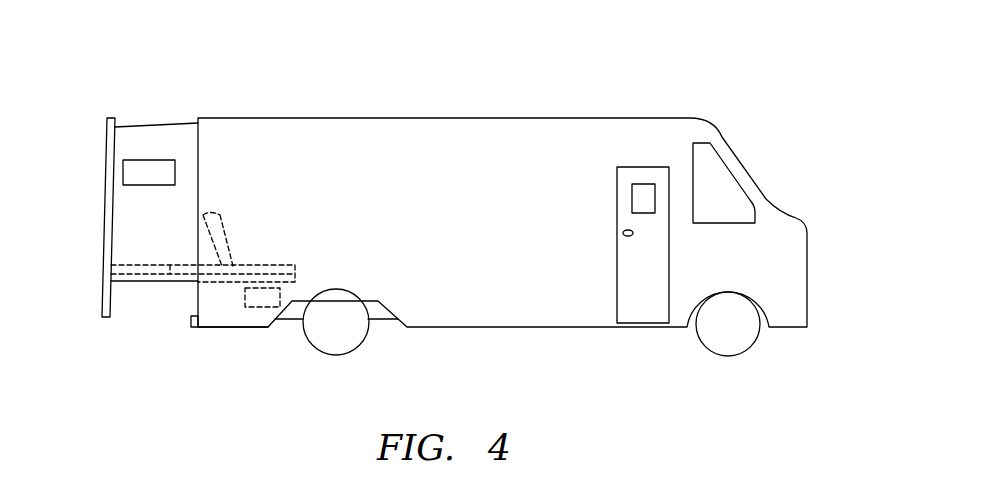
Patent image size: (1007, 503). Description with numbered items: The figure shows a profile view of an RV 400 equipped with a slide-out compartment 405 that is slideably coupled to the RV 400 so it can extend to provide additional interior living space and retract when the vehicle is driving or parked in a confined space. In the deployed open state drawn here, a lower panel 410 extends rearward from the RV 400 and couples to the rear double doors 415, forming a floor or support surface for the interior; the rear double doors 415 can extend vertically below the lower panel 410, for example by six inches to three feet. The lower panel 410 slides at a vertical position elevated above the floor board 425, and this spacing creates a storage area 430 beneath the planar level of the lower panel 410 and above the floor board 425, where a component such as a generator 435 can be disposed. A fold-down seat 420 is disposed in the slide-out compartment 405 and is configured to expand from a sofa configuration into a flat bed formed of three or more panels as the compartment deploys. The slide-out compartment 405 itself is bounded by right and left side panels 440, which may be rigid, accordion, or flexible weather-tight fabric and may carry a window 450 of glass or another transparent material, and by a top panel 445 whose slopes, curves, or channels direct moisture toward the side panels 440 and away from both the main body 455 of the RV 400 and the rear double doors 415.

The RV 400 is at (762, 50).
The slide-out compartment 405 is at (167, 100).
The lower panel 410 is at (150, 283).
The rear double doors 415 is at (102, 143).
The fold-down seat 420 is at (252, 243).
The floor board 425 is at (242, 330).
The storage area 430 is at (210, 318).
The generator 435 is at (282, 295).
The right and left side panels 440 is at (120, 235).
The top panel 445 is at (150, 123).
The window 450 is at (177, 175).
The main body 455 is at (433, 117).